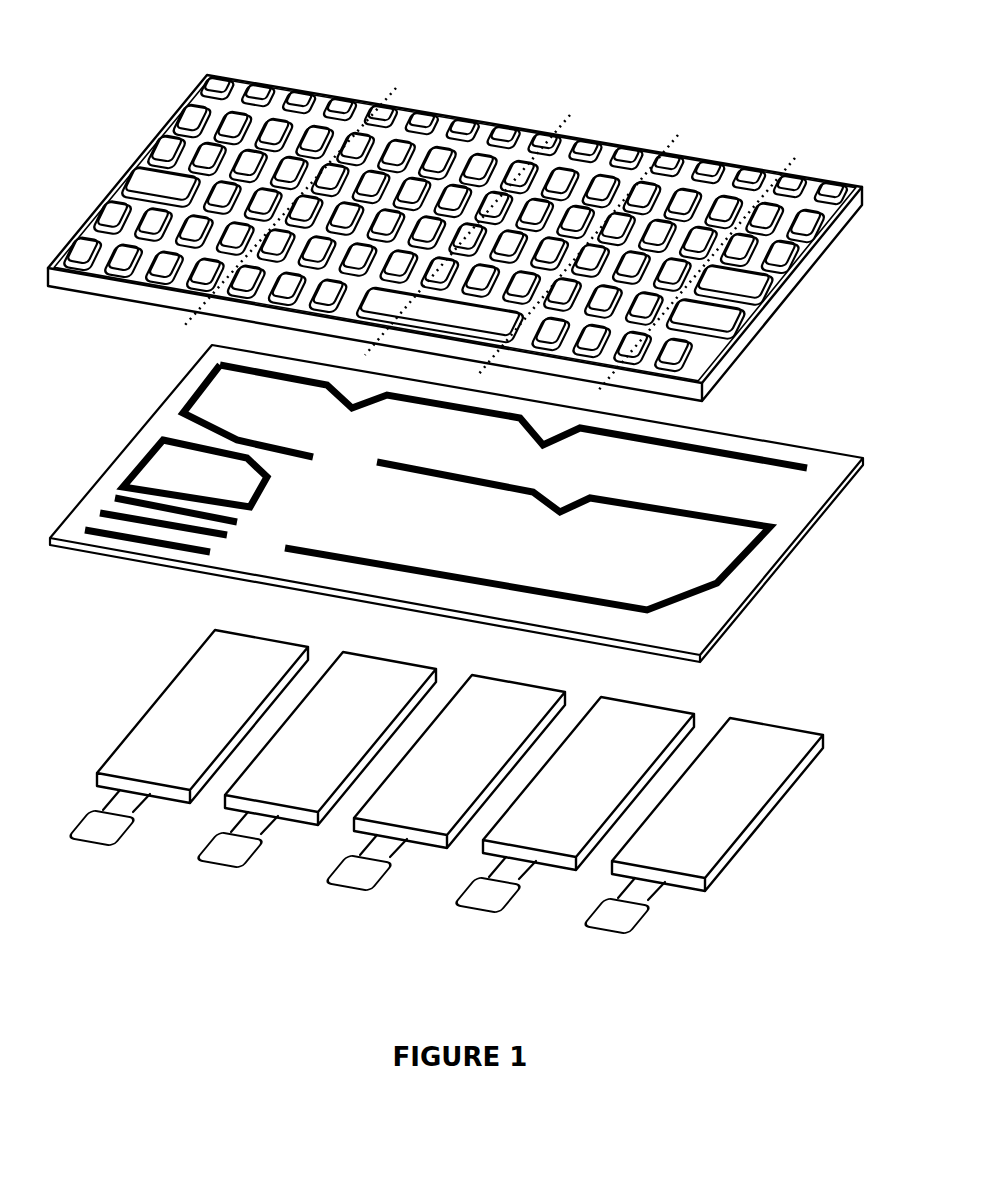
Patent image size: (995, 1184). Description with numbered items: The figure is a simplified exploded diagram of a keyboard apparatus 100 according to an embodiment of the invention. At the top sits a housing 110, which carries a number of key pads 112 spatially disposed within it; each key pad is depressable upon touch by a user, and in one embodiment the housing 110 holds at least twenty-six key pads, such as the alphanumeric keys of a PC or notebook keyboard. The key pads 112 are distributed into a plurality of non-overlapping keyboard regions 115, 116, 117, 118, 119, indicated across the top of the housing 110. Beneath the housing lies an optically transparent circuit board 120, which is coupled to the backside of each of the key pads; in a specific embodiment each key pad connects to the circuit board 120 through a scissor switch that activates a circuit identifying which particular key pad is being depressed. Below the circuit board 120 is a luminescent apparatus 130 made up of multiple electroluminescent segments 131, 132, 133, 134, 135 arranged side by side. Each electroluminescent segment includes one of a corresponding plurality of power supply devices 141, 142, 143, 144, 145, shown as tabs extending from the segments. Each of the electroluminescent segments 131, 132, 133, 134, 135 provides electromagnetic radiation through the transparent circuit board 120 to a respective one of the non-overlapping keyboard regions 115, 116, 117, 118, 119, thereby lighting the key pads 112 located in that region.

The keyboard apparatus 100 is at (736, 92).
The housing 110 is at (464, 205).
The key pads 112 is at (417, 155).
The non-overlapping keyboard region 115 is at (266, 80).
The non-overlapping keyboard region 116 is at (450, 117).
The non-overlapping keyboard region 117 is at (587, 140).
The non-overlapping keyboard region 118 is at (707, 157).
The non-overlapping keyboard region 119 is at (815, 174).
The optically transparent circuit board 120 is at (798, 550).
The luminescent apparatus 130 is at (782, 700).
The electroluminescent segment 131 is at (225, 650).
The electroluminescent segment 132 is at (360, 672).
The electroluminescent segment 133 is at (488, 692).
The electroluminescent segment 134 is at (622, 717).
The electroluminescent segment 135 is at (752, 735).
The power supply device 141 is at (93, 838).
The power supply device 142 is at (218, 862).
The power supply device 143 is at (347, 887).
The power supply device 144 is at (480, 907).
The power supply device 145 is at (608, 928).